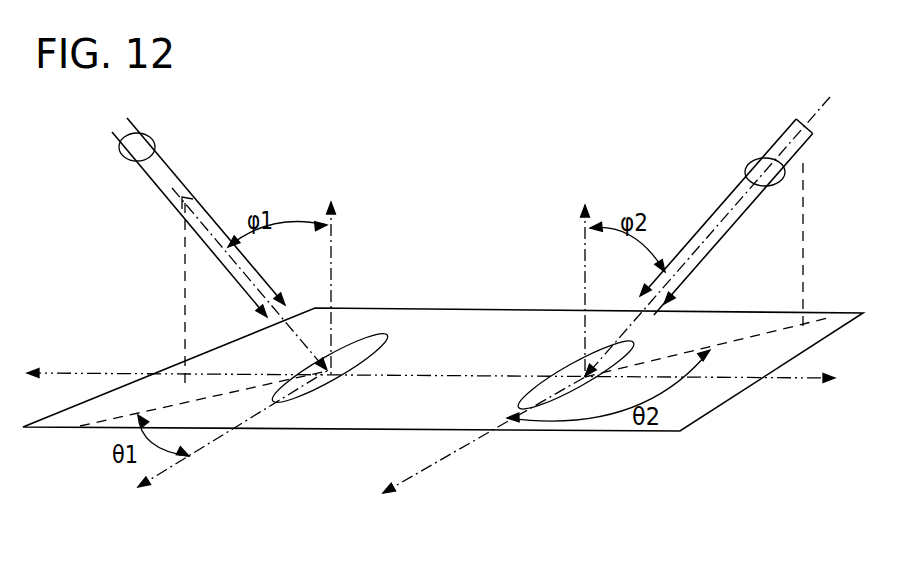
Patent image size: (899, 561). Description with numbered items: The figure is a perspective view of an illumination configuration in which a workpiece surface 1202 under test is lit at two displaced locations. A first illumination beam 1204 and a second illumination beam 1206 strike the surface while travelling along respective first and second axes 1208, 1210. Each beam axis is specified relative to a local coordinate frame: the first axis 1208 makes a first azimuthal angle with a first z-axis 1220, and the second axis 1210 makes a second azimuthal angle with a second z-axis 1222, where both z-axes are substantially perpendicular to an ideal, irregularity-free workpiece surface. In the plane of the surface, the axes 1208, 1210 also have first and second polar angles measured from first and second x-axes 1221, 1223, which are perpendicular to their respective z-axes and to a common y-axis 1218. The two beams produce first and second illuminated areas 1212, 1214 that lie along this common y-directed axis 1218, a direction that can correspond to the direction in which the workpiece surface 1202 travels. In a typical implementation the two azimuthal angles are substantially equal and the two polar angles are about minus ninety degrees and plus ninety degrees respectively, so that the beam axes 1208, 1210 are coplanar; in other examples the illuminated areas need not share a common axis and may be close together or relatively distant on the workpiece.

The workpiece surface 1202 is at (417, 431).
The first illumination beam 1204 is at (152, 133).
The second illumination beam 1206 is at (747, 167).
The first beam axis 1208 is at (208, 193).
The second beam axis 1210 is at (780, 113).
The first illuminated area 1212 is at (278, 403).
The second illuminated area 1214 is at (633, 342).
The common y-axis 1218 is at (403, 372).
The first z-axis 1220 is at (332, 265).
The second z-axis 1222 is at (582, 280).
The first x-axis 1221 is at (200, 452).
The second x-axis 1223 is at (449, 449).